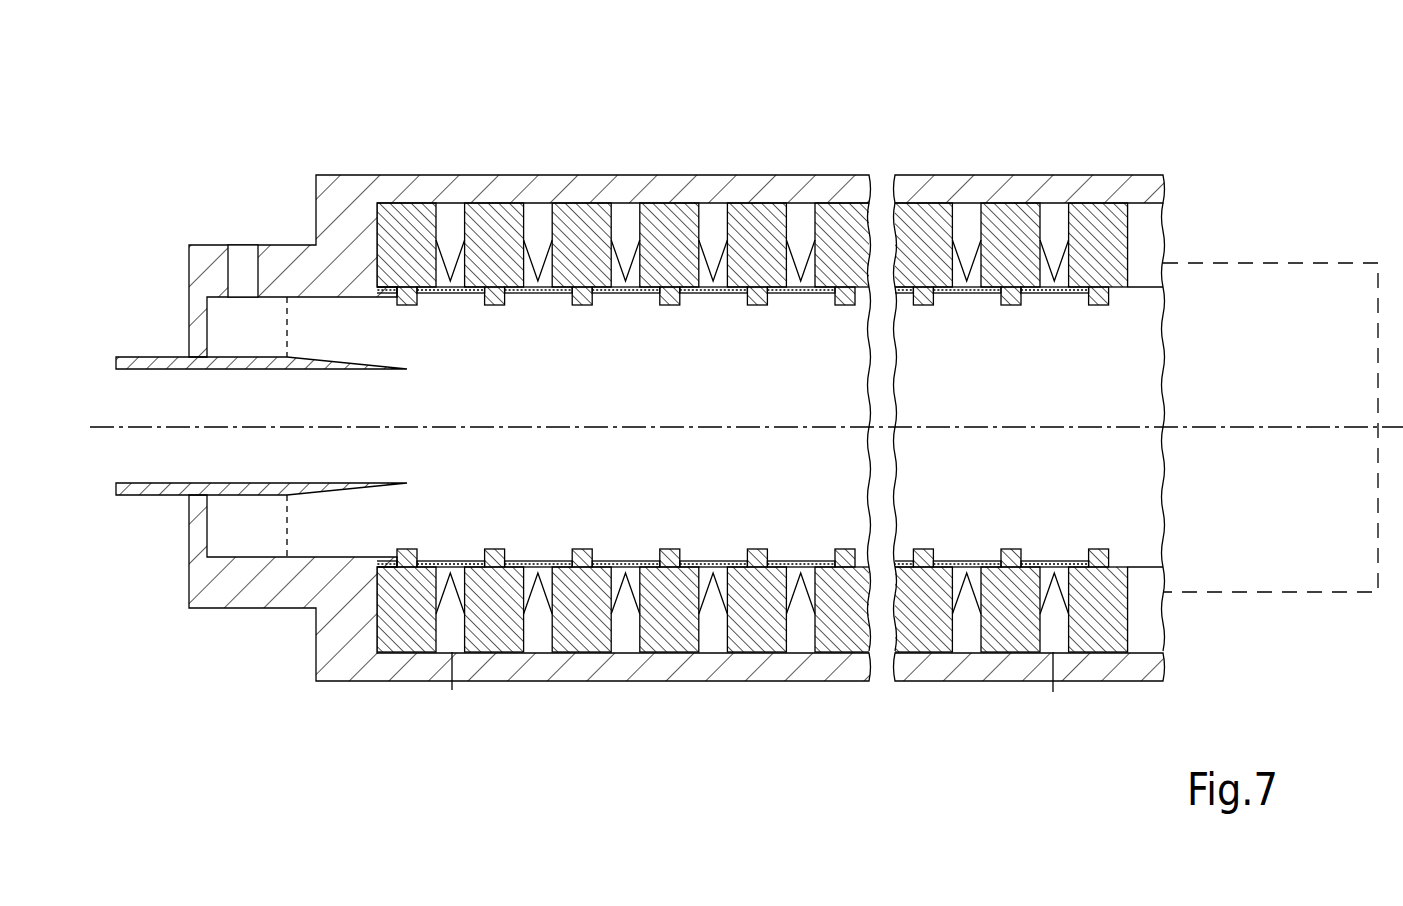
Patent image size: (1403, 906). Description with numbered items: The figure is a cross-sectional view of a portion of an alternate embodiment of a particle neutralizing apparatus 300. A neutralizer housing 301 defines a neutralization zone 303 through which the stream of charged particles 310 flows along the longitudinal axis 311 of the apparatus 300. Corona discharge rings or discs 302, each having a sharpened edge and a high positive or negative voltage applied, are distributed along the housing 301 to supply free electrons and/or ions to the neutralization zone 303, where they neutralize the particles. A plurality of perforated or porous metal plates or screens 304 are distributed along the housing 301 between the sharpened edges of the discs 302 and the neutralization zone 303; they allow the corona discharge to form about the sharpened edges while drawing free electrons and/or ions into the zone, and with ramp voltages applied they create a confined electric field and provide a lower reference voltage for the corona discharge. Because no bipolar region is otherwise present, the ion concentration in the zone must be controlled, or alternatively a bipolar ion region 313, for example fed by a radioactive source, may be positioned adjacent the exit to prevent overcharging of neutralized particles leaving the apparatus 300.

The neutralizing apparatus 300 is at (744, 391).
The neutralizer housing 301 is at (641, 175).
The corona discharge rings or discs 302 is at (442, 235).
The neutralization zone 303 is at (604, 414).
The perforated or porous metal plates or screens 304 is at (468, 293).
The stream of charged particles 310 is at (115, 464).
The longitudinal axis 311 is at (1260, 427).
The bipolar ion region 313 is at (1302, 592).